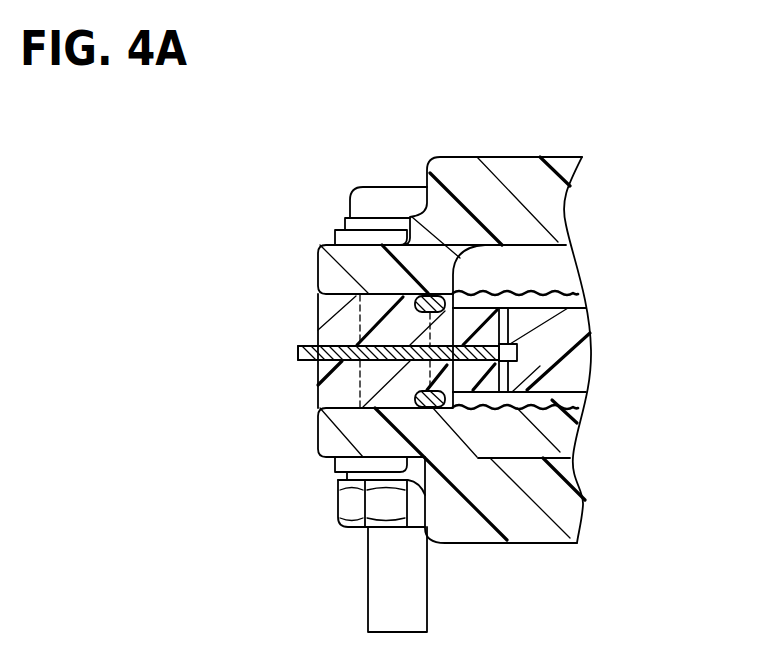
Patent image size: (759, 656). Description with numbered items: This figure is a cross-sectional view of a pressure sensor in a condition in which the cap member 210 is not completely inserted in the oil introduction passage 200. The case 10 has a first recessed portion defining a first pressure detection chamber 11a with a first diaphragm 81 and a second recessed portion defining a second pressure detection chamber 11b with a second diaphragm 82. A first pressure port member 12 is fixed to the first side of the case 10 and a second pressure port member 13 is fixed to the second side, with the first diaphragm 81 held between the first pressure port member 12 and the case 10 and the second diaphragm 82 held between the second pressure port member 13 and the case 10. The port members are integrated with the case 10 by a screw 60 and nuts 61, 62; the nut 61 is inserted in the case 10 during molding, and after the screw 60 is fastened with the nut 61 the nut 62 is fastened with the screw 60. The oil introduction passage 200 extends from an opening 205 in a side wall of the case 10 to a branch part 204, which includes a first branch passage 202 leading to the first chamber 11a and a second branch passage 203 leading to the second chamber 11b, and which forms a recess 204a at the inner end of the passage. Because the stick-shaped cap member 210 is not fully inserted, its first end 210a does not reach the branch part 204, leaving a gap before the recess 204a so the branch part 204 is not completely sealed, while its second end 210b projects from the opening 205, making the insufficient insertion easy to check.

The case 10 is at (586, 362).
The first pressure detection chamber 11a is at (578, 295).
The second pressure detection chamber 11b is at (578, 394).
The first pressure port member 12 is at (530, 173).
The second pressure port member 13 is at (560, 513).
The screw 60 is at (386, 195).
The nut 61 is at (358, 391).
The nut 62 is at (347, 511).
The first diaphragm 81 is at (548, 283).
The second diaphragm 82 is at (555, 423).
The oil introduction passage 200 is at (350, 374).
The first branch passage 202 is at (498, 308).
The second branch passage 203 is at (500, 393).
The branch part 204 is at (497, 364).
The recess 204a is at (535, 384).
The opening 205 is at (318, 340).
The cap member 210 is at (320, 313).
The first end 210a is at (518, 352).
The second end 210b is at (298, 352).